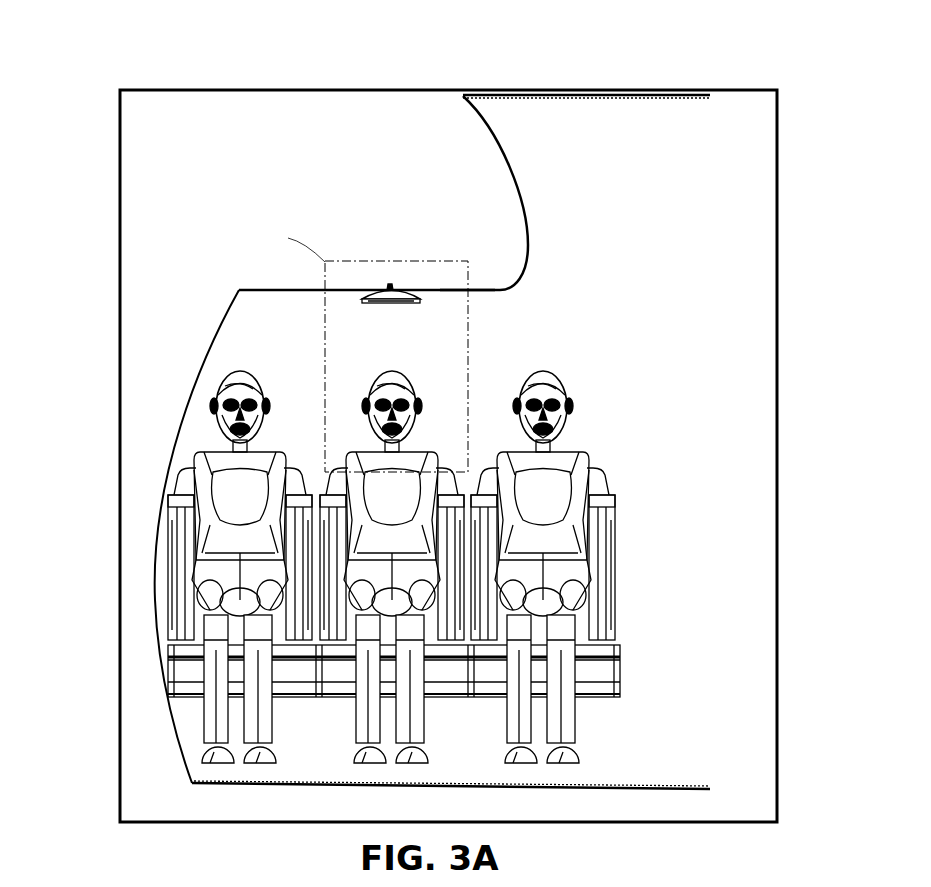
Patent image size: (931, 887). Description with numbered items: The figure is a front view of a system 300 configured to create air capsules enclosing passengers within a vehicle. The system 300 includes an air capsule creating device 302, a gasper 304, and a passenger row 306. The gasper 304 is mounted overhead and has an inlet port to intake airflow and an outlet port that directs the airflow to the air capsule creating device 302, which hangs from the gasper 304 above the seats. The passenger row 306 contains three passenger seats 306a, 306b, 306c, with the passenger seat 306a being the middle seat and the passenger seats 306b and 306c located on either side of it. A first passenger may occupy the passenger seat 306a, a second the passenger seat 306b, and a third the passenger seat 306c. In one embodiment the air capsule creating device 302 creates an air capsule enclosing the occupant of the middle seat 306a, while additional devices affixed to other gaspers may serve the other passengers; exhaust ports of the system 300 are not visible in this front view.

The system 300 is at (678, 70).
The air capsule creating device 302 is at (414, 303).
The gasper 304 is at (390, 290).
The passenger row 306 is at (360, 550).
The passenger seat 306a is at (453, 452).
The passenger seat 306b is at (610, 502).
The passenger seat 306c is at (188, 438).